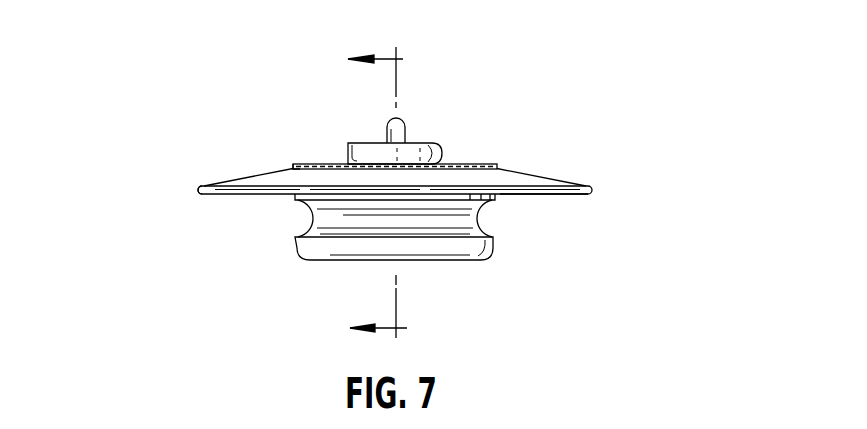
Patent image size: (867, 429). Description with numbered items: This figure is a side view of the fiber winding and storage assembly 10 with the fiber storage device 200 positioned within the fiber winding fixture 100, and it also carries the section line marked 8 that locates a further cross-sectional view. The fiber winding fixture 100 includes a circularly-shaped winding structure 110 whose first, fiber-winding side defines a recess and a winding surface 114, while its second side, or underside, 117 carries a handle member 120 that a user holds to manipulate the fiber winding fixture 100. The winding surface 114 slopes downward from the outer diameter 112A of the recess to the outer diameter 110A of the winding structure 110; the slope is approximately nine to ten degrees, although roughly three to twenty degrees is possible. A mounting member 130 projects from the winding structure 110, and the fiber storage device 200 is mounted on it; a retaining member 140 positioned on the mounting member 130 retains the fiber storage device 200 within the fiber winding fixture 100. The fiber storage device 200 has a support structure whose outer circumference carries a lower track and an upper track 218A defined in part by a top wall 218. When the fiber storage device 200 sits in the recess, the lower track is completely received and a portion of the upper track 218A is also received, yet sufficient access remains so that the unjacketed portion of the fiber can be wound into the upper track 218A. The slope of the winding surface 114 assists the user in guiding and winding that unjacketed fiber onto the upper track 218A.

The fiber winding and storage assembly 10 is at (507, 85).
The section line 8- 8 is at (367, 196).
The fiber winding fixture 100 is at (577, 173).
The winding structure 110 is at (515, 165).
The outer diameter of winding structure 110A is at (198, 191).
The outer diameter of recess 112A is at (293, 166).
The winding surface 114 is at (535, 175).
The second side 117 is at (553, 196).
The handle member 120 is at (297, 242).
The mounting member 130 is at (406, 124).
The retaining member 140 is at (419, 144).
The fiber storage device 200 is at (332, 163).
The top wall 218 is at (307, 165).
The upper track 218A is at (288, 162).